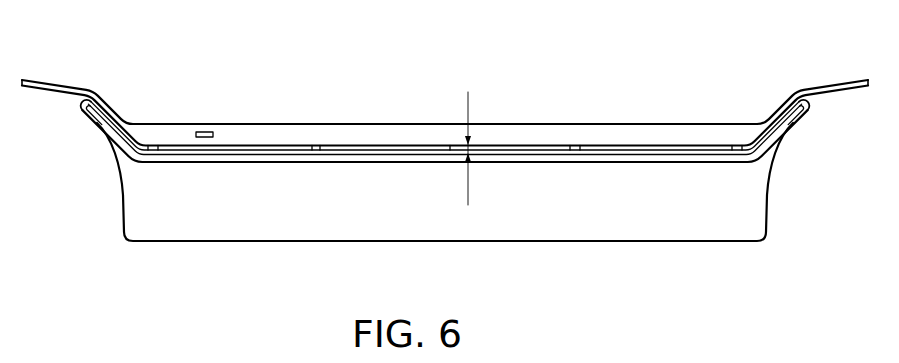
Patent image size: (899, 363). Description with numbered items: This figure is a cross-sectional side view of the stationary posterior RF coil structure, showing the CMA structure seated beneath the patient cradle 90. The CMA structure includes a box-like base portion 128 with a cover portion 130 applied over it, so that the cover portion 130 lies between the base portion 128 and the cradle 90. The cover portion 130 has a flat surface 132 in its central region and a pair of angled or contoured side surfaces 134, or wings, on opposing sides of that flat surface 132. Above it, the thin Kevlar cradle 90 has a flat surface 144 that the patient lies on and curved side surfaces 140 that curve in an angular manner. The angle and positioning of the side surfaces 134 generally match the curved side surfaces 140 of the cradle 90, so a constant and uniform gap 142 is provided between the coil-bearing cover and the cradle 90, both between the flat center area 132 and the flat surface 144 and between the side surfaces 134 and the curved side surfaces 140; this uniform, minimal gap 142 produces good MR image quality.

The cradle 90 is at (367, 116).
The base portion 128 is at (575, 220).
The cover portion 130 is at (222, 152).
The flat surface 132 is at (255, 157).
The angled/contoured side surfaces 134 is at (103, 139).
The curved side surfaces 140 is at (128, 122).
The gap 142 is at (63, 158).
The flat surface 144 is at (637, 130).